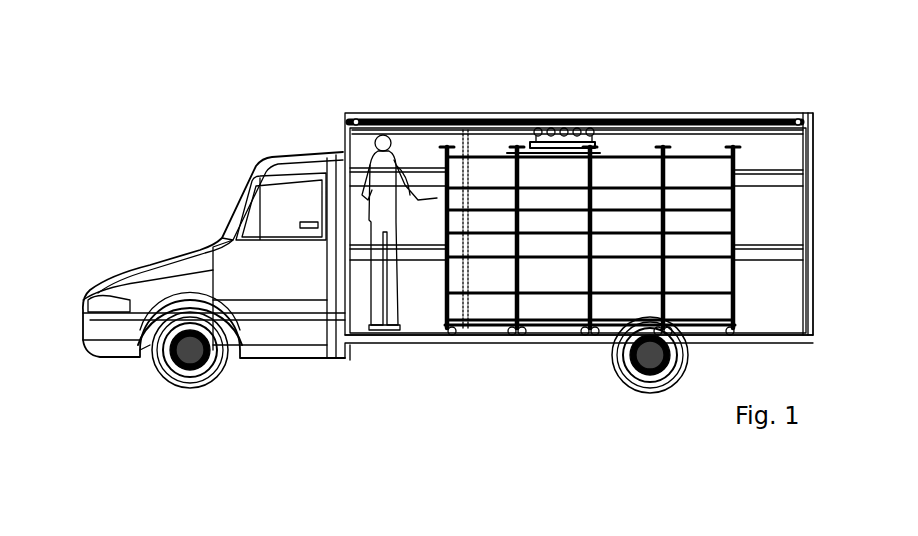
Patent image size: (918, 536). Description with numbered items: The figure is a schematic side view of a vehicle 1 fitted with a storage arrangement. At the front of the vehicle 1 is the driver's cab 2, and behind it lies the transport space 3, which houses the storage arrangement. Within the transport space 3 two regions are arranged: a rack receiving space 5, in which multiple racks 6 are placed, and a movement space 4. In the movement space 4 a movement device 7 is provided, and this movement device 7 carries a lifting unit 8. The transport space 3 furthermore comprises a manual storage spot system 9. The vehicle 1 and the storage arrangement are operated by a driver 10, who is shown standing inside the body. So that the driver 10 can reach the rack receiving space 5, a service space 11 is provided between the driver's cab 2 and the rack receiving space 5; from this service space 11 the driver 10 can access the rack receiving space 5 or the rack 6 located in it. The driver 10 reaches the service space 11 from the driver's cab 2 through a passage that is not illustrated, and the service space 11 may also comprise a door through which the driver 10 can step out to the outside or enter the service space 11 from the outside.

The vehicle 1 is at (470, 420).
The driver's cab 2 is at (123, 195).
The transport space 3 is at (623, 423).
The movement space 4 is at (703, 137).
The rack receiving space 5 is at (623, 222).
The rack 6 is at (550, 280).
The movement device 7 is at (684, 117).
The lifting unit 8 is at (538, 124).
The manual storage spot system 9 is at (777, 313).
The driver 10 is at (397, 152).
The service space 11 is at (420, 300).